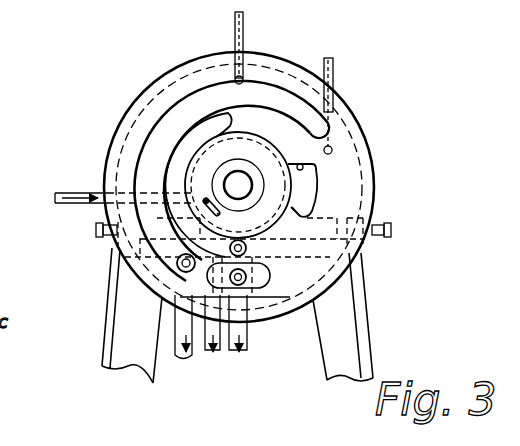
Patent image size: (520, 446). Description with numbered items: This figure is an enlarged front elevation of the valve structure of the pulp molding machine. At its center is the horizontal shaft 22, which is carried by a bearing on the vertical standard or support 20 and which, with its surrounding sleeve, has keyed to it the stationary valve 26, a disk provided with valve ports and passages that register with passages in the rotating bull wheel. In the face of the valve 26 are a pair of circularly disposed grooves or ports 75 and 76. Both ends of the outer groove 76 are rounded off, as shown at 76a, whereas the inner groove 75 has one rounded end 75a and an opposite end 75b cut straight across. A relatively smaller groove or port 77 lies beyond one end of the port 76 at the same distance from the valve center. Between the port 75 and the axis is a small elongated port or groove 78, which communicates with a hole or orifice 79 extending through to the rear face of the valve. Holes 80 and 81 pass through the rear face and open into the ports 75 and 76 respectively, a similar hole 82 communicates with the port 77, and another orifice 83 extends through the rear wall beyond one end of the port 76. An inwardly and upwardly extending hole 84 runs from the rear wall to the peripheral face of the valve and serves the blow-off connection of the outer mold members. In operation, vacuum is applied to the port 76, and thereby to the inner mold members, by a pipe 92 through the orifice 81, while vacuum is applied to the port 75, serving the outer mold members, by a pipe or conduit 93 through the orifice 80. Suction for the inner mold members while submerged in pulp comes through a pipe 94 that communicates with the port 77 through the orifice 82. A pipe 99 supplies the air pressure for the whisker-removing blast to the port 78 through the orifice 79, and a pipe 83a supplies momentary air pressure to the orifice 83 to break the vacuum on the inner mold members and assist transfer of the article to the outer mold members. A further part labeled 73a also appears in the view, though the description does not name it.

The vertical standard or support 20 is at (345, 290).
The horizontal shaft 22 is at (238, 185).
The stationary valve 26 is at (347, 177).
The bolt 73a is at (195, 257).
The groove or port 75 is at (308, 199).
The rounded end of groove 75a is at (190, 118).
The straight end of groove 75b is at (300, 163).
The groove or port 76 is at (186, 98).
The rounded ends of groove 76a is at (332, 125).
The smaller groove or port 77 is at (262, 276).
The elongated port or groove 78 is at (222, 213).
The hole or orifice 79 is at (205, 200).
The hole or orifice 80 is at (288, 225).
The hole or orifice 81 is at (180, 268).
The hole 82 is at (248, 287).
The hole or orifice 83 is at (332, 150).
The pipe 83a is at (333, 72).
The hole or orifice 84 is at (236, 18).
The pipe 92 is at (178, 333).
The pipe or conduit 93 is at (212, 352).
The pipe 94 is at (243, 338).
The pipe 99 is at (67, 193).